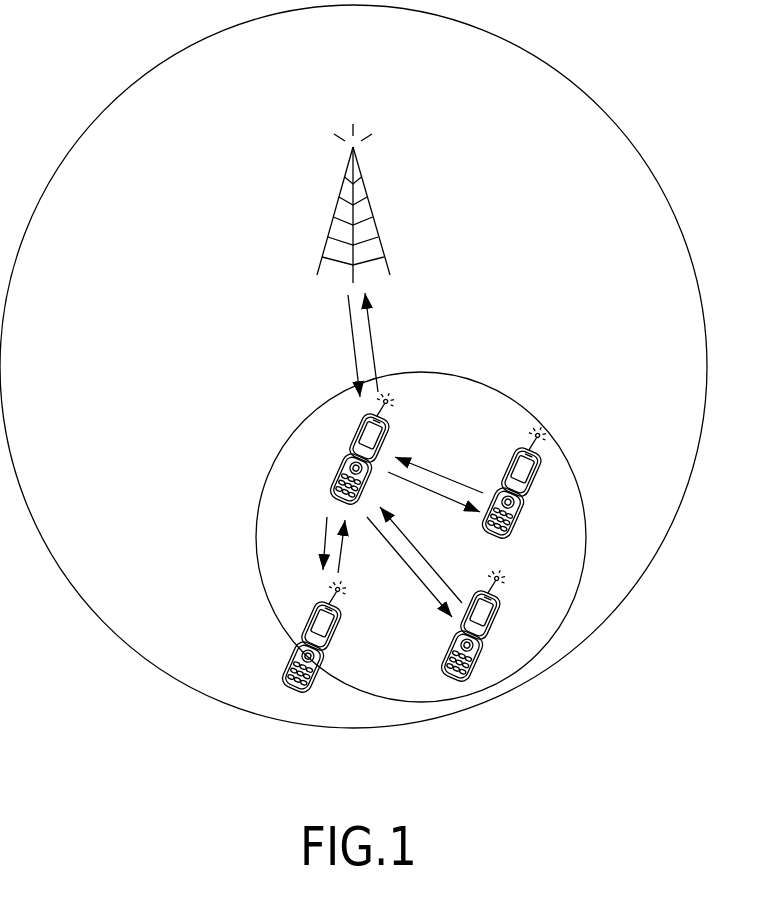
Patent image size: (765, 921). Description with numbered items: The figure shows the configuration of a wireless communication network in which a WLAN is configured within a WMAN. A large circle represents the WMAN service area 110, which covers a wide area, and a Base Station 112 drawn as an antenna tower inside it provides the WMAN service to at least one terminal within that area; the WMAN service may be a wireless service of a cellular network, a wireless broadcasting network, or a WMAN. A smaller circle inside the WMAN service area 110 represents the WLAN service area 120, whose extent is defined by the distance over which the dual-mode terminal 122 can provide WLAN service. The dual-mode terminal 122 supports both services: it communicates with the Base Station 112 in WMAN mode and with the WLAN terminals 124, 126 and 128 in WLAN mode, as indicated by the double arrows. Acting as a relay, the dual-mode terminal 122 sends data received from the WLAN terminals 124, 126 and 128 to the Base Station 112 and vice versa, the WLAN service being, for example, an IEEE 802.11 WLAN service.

The WMAN service area 110 is at (610, 119).
The Base Station 112 is at (374, 217).
The WLAN service area 120 is at (273, 462).
The dual-mode terminal 122 is at (386, 428).
The WLAN terminal 124 is at (541, 485).
The WLAN terminal 126 is at (504, 607).
The WLAN terminal 128 is at (297, 659).